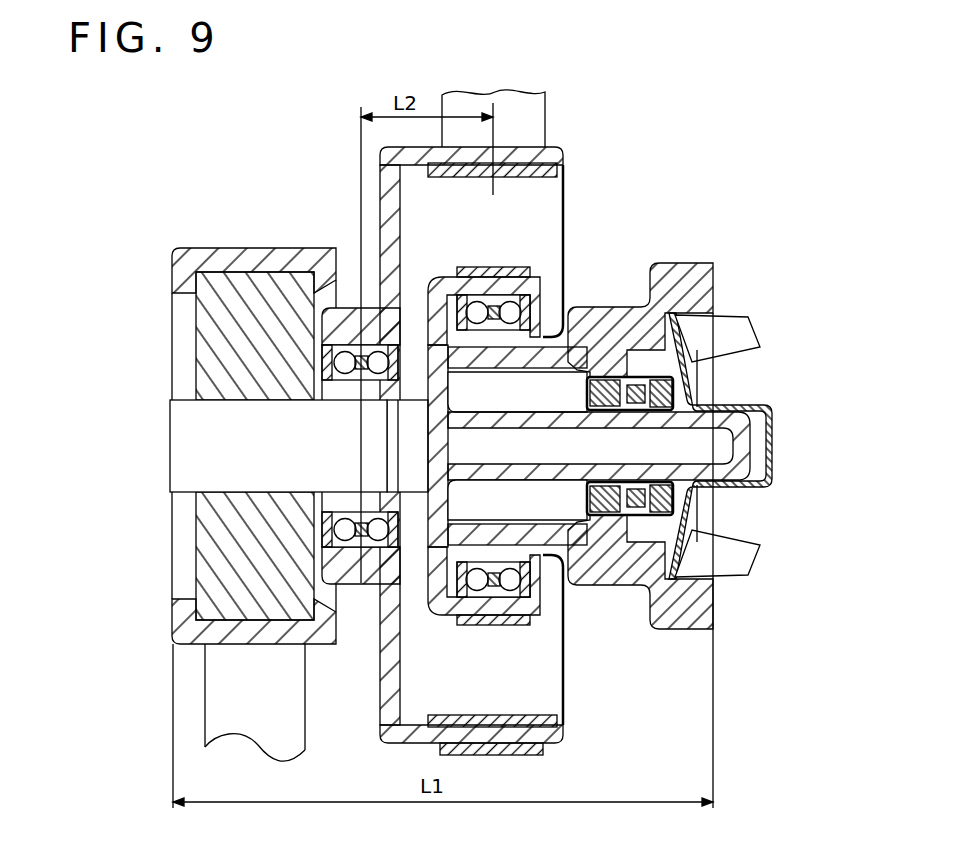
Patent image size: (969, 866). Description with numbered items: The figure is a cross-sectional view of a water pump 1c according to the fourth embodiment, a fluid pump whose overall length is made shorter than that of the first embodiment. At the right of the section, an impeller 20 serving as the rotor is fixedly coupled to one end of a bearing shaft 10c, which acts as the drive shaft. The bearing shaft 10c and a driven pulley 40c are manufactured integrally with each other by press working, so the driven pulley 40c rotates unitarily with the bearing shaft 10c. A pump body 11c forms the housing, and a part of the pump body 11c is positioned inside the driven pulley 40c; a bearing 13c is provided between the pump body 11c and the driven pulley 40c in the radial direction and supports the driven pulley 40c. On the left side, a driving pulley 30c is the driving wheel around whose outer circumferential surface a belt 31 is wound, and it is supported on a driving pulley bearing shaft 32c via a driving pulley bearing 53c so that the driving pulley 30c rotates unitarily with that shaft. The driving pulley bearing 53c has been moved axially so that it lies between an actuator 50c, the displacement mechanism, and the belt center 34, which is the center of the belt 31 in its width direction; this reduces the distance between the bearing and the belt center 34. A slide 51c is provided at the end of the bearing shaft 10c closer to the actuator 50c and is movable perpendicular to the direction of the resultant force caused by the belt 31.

The water pump 1c is at (642, 195).
The bearing shaft 10c is at (702, 418).
The pump body 11c is at (607, 312).
The bearing 13c is at (495, 593).
The impeller 20 is at (737, 330).
The driving pulley 30c is at (566, 151).
The belt 31 is at (527, 133).
The belt center 34 is at (494, 144).
The driving pulley bearing shaft 32c is at (178, 418).
The driven pulley 40c is at (530, 287).
The actuator 50c is at (187, 245).
The slide 51c is at (213, 577).
The driving pulley bearing 53c is at (357, 548).